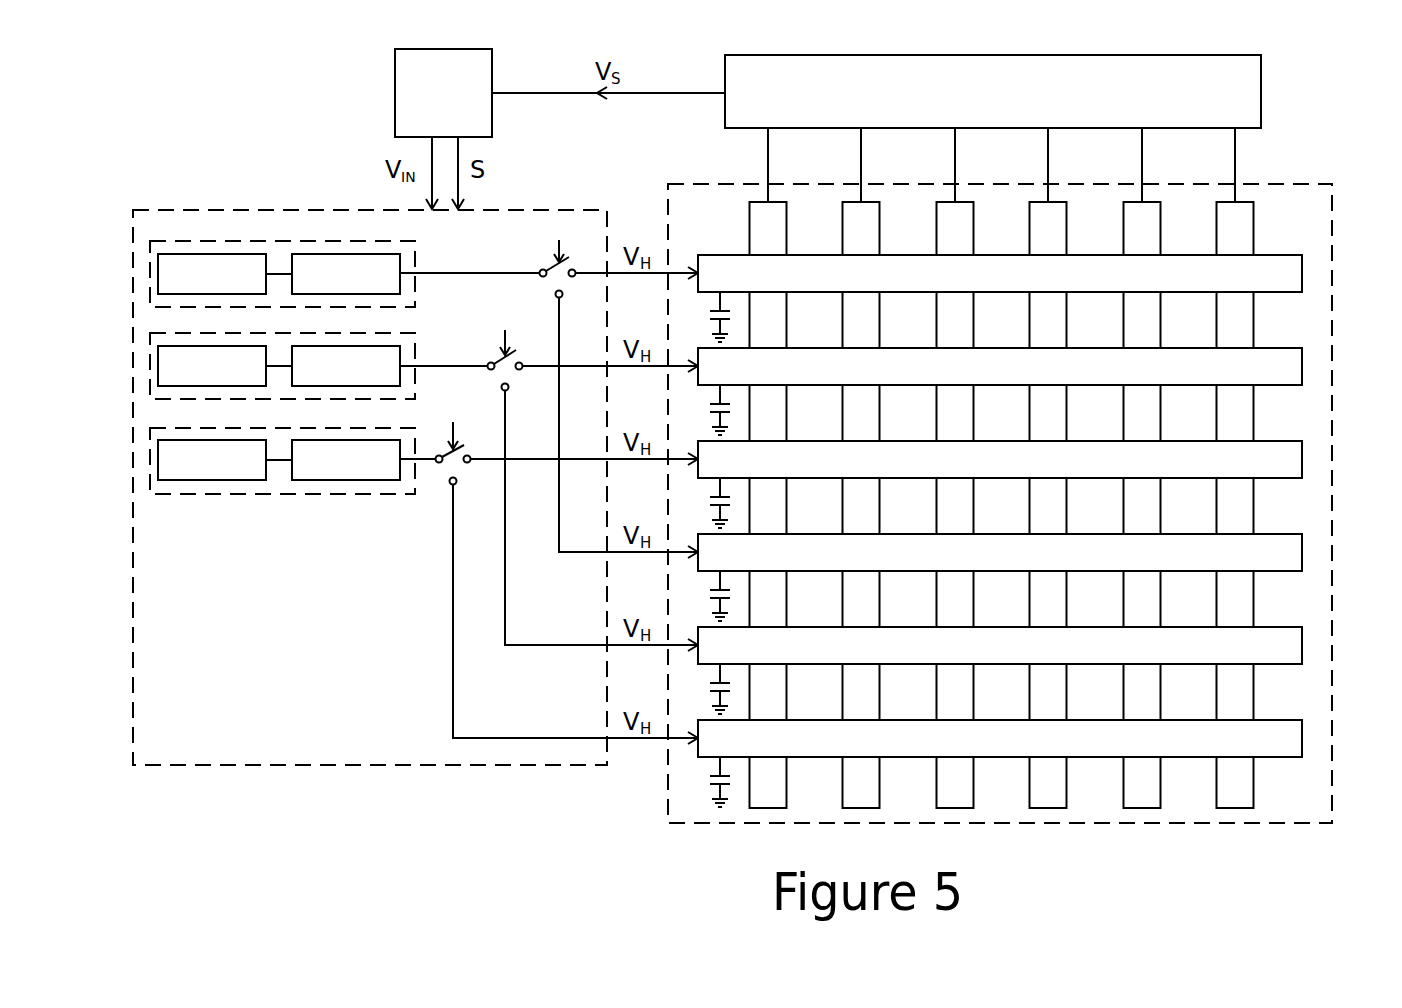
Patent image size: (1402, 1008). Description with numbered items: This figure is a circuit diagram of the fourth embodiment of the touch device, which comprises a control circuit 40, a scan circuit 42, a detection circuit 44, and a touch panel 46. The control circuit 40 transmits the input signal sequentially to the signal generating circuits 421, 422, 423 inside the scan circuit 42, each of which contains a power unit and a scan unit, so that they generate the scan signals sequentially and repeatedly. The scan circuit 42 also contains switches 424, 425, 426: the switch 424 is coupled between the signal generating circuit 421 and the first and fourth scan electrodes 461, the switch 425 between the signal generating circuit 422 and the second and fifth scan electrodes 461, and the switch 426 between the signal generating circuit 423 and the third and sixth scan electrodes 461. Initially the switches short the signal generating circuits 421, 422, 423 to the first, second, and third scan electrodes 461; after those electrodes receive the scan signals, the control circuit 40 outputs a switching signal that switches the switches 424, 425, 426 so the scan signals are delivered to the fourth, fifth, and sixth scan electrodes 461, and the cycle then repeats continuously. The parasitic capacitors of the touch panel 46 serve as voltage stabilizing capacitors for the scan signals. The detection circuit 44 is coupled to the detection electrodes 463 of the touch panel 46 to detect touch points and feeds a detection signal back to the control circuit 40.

The control circuit 40 is at (470, 49).
The scan circuit 42 is at (570, 209).
The detection circuit 44 is at (1261, 93).
The touch panel 46 is at (1290, 184).
The signal generating circuit 421 is at (150, 275).
The signal generating circuit 422 is at (150, 368).
The signal generating circuit 423 is at (150, 462).
The switch 424 is at (541, 269).
The switch 425 is at (489, 362).
The switch 426 is at (453, 486).
The scan electrodes 461 is at (1302, 273).
The detection electrodes 463 is at (1161, 240).